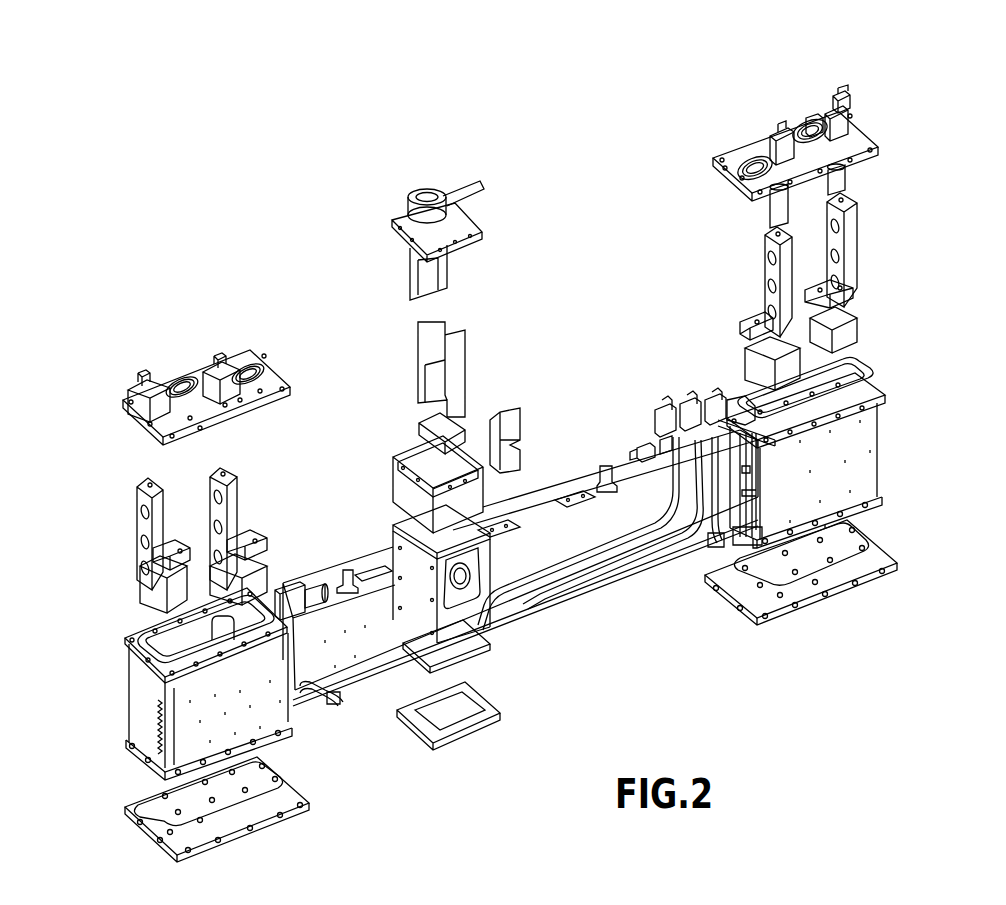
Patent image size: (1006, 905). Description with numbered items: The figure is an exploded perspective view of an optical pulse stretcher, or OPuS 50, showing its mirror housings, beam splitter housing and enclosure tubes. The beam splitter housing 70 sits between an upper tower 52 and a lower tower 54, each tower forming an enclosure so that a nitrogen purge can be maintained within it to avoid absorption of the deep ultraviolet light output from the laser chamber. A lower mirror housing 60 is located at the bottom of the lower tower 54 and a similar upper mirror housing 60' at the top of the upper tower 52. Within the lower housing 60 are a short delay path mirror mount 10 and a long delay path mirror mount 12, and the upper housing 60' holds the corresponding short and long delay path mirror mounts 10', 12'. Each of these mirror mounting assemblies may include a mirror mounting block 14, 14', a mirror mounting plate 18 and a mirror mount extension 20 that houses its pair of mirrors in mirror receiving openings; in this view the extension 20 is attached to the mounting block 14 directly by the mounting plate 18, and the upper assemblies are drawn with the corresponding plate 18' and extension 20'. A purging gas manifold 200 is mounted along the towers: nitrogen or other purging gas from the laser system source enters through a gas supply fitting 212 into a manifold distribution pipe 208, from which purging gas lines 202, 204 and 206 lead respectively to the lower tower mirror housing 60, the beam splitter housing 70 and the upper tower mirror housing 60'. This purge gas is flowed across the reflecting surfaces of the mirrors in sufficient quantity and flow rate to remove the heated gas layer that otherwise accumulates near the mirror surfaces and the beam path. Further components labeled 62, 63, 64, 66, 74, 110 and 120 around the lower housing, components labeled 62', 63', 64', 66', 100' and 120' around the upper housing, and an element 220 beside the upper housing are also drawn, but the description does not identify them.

The short delay path mirror mount 10 is at (258, 507).
The long delay path mirror mount 12 is at (108, 529).
The mirror mounting block 14 is at (163, 583).
The mirror mounting plate 18 is at (224, 525).
The mirror mount extension 20 is at (203, 466).
The optical pulse stretcher (OPuS) 50 is at (611, 615).
The upper tower 52 is at (540, 507).
The lower tower 54 is at (360, 640).
The lower mirror housing 60 is at (263, 729).
The base plate 62 is at (242, 809).
The gasket flange 63 is at (177, 734).
The manifold plate 64 is at (206, 366).
The bottom flange 66 is at (169, 763).
The beam splitter housing 70 is at (490, 627).
The fitting 74 is at (270, 575).
The port flange 110 is at (176, 383).
The valve block 120 is at (146, 351).
The purging gas manifold 200 is at (670, 388).
The purging gas line 202 is at (660, 506).
The purging gas line 204 is at (677, 548).
The purging gas line 206 is at (753, 498).
The manifold distribution pipe 208 is at (664, 452).
The gas supply fitting 212 is at (636, 455).
The bracket rod 220 is at (753, 463).
The short delay path mirror mount 10' is at (718, 263).
The long delay path mirror mount 12' is at (897, 250).
The mirror mounting block 14' is at (791, 335).
The bracket 18' is at (766, 271).
The post column 20' is at (793, 191).
The upper mirror housing 60' is at (841, 471).
The base plate 62' is at (801, 617).
The gasket flange 63' is at (842, 433).
The manifold plate 64' is at (795, 151).
The bottom flange 66' is at (852, 516).
The valve 100' is at (809, 89).
The valve block 120' is at (835, 100).